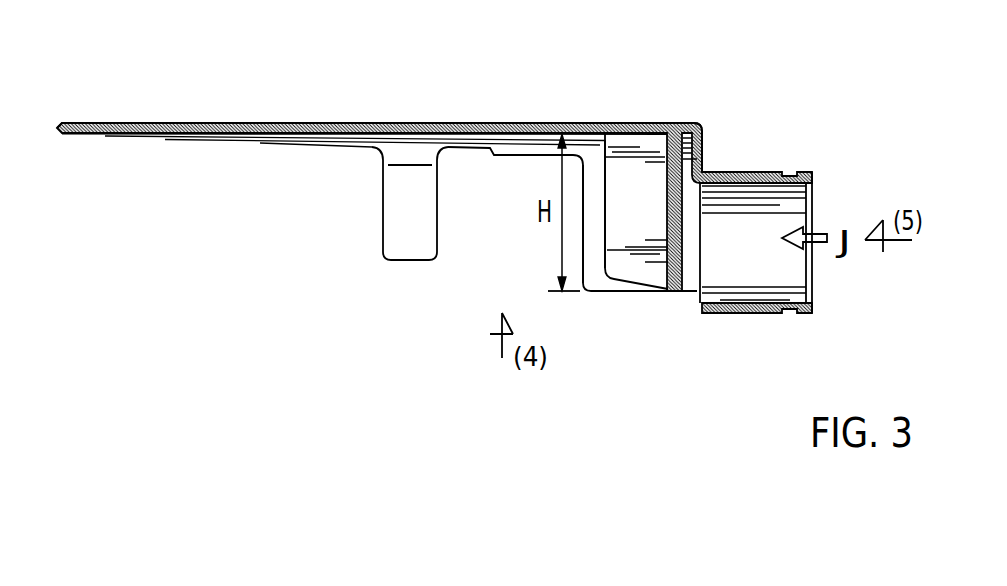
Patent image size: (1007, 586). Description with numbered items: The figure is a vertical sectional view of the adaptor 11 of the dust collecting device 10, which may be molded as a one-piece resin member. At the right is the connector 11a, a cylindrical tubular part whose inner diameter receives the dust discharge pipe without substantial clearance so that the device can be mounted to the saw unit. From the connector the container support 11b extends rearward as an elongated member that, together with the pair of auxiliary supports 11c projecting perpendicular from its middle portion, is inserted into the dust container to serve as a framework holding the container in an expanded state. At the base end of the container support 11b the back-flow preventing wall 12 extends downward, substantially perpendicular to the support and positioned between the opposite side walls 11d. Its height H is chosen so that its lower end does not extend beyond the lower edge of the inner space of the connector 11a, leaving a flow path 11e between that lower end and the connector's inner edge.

The dust collecting device 10 is at (418, 91).
The adaptor 11 is at (696, 120).
The connector 11a is at (762, 170).
The container support 11b is at (443, 123).
The auxiliary supports 11c is at (408, 219).
The side walls 11d is at (592, 218).
The flow path 11e is at (697, 293).
The back-flow preventing wall 12 is at (644, 184).